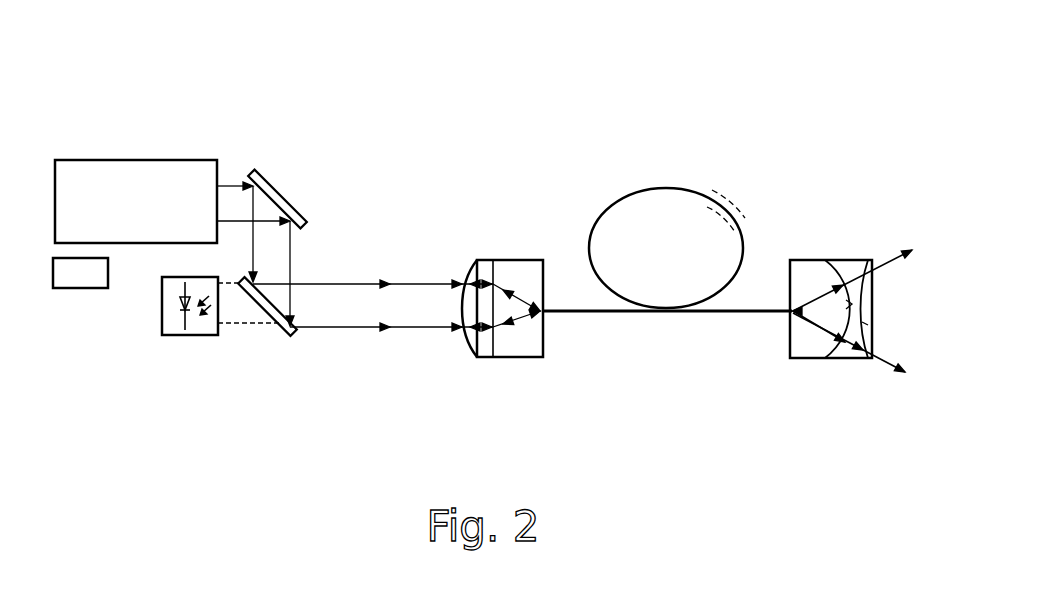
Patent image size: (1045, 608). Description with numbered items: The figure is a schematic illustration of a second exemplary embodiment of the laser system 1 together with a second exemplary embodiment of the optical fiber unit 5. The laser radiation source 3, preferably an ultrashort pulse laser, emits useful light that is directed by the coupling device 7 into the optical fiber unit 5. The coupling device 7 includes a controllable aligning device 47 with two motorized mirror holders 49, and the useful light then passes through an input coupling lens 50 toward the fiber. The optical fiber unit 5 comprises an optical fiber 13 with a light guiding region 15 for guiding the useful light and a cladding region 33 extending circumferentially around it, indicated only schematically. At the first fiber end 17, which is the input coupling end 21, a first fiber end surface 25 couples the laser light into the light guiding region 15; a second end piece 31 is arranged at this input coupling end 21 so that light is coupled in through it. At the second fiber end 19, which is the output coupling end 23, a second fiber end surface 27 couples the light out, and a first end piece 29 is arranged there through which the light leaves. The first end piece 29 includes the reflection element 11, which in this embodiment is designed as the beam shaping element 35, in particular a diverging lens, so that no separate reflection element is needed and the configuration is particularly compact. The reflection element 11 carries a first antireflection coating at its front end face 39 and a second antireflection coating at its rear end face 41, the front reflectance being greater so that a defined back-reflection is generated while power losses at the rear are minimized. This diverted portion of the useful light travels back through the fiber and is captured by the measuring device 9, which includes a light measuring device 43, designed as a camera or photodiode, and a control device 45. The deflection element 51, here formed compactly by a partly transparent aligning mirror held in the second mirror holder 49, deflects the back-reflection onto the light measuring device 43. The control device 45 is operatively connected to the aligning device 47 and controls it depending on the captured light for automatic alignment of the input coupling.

The laser system 1 is at (655, 45).
The laser radiation source 3 is at (130, 160).
The optical fiber unit 5 is at (695, 188).
The coupling device 7 is at (340, 362).
The measuring device 9 is at (243, 352).
The reflection element 11 is at (853, 355).
The optical fiber 13 is at (690, 190).
The light guiding region 15 is at (698, 315).
The first fiber end 17 is at (503, 308).
The second fiber end 19 is at (847, 322).
The input coupling end 21 is at (503, 308).
The output coupling end 23 is at (847, 322).
The first fiber end surface 25 is at (538, 305).
The second fiber end surface 27 is at (800, 318).
The first end piece 29 is at (822, 250).
The second end piece 31 is at (488, 246).
The cladding region 33 is at (733, 200).
The optical beam shaping element 35 is at (852, 265).
The front end face 39 is at (852, 305).
The rear end face 41 is at (867, 325).
The light measuring device 43 is at (191, 335).
The control device 45 is at (80, 289).
The aligning device 47 is at (285, 193).
The motorized mirror holder 49 is at (285, 197).
The input coupling lens 50 is at (473, 357).
The optical deflection element 51 is at (283, 340).